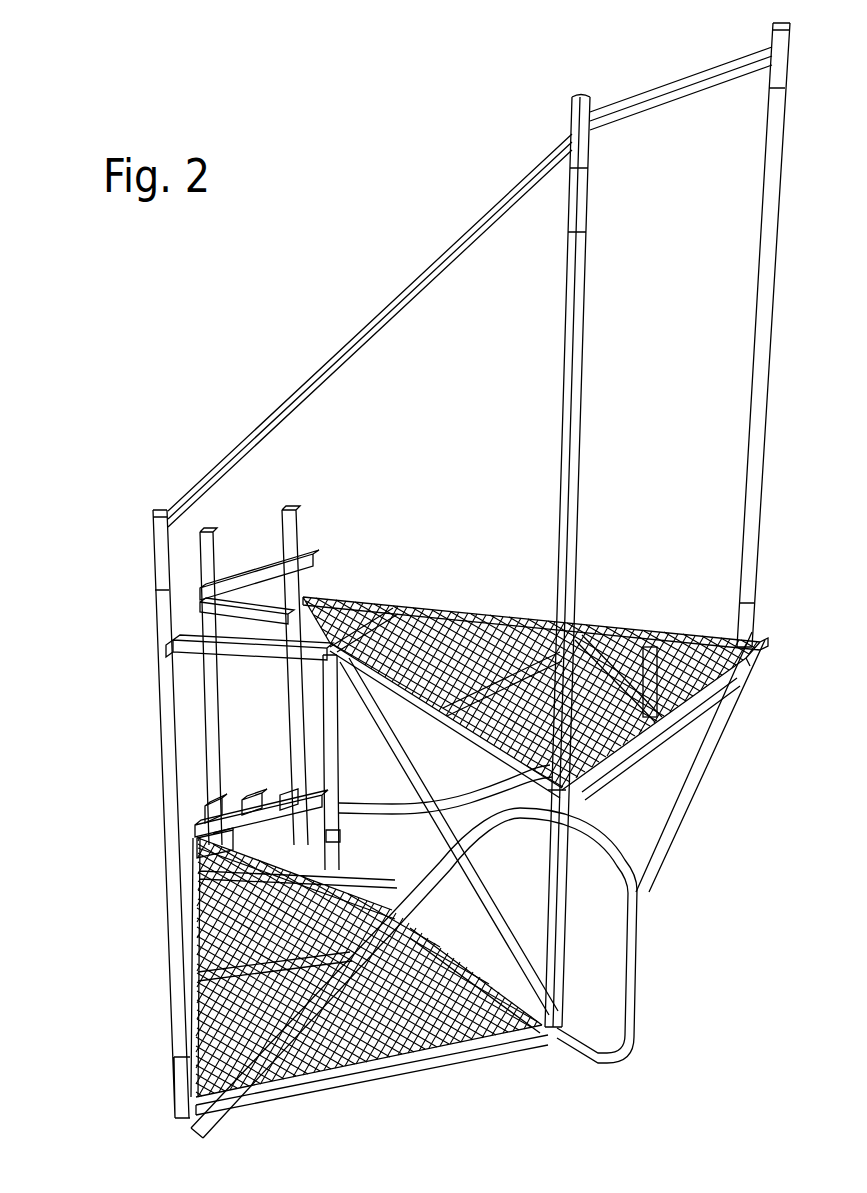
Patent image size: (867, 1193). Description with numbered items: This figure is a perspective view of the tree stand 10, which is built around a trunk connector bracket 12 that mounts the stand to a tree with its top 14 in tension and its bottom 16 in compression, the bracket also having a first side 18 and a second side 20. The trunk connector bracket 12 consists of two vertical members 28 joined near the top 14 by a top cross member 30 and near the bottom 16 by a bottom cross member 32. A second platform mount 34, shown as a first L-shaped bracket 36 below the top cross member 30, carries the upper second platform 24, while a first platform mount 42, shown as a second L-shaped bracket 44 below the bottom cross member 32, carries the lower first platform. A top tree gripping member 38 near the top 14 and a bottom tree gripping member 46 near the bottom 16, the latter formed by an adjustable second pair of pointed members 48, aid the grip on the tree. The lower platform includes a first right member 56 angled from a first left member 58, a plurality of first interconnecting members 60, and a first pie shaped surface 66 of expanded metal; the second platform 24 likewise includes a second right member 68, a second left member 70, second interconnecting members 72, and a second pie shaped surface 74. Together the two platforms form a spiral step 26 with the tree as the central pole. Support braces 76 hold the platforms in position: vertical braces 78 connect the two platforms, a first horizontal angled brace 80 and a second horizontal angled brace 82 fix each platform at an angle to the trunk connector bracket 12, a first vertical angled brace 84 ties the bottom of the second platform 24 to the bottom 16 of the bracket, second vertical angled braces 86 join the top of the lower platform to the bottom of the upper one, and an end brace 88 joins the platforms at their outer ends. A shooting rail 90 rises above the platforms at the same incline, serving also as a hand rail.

The tree stand 10 is at (398, 118).
The trunk connector bracket 12 is at (88, 639).
The top 14 is at (268, 485).
The bottom 16 is at (135, 907).
The first side 18 is at (123, 735).
The second side 20 is at (535, 655).
The second platform 24 is at (603, 568).
The spiral step 26 is at (353, 1003).
The vertical members 28 is at (218, 793).
The top cross member 30 is at (243, 560).
The bottom cross member 32 is at (200, 847).
The second platform mount 34 is at (207, 612).
The first L-shaped bracket 36 is at (247, 611).
The top tree gripping member 38 is at (312, 523).
The first platform mount 42 is at (340, 858).
The second L-shaped bracket 44 is at (289, 799).
The bottom tree gripping member 46 is at (234, 745).
The second pair of pointed members 48 is at (200, 818).
The first right member 56 is at (443, 943).
The first left member 58 is at (240, 975).
The first interconnecting members 60 is at (235, 935).
The first pie shaped surface 66 is at (415, 1015).
The second right member 68 is at (477, 560).
The second left member 70 is at (447, 722).
The second interconnecting members 72 is at (462, 685).
The second pie shaped surface 74 is at (627, 633).
The support braces 76 is at (618, 955).
The vertical braces 78 is at (335, 766).
The first horizontal angled brace 80 is at (338, 845).
The second horizontal angled brace 82 is at (233, 647).
The first vertical angled brace 84 is at (470, 800).
The second vertical angled braces 86 is at (370, 717).
The end brace 88 is at (624, 1042).
The shooting rail 90 is at (360, 320).